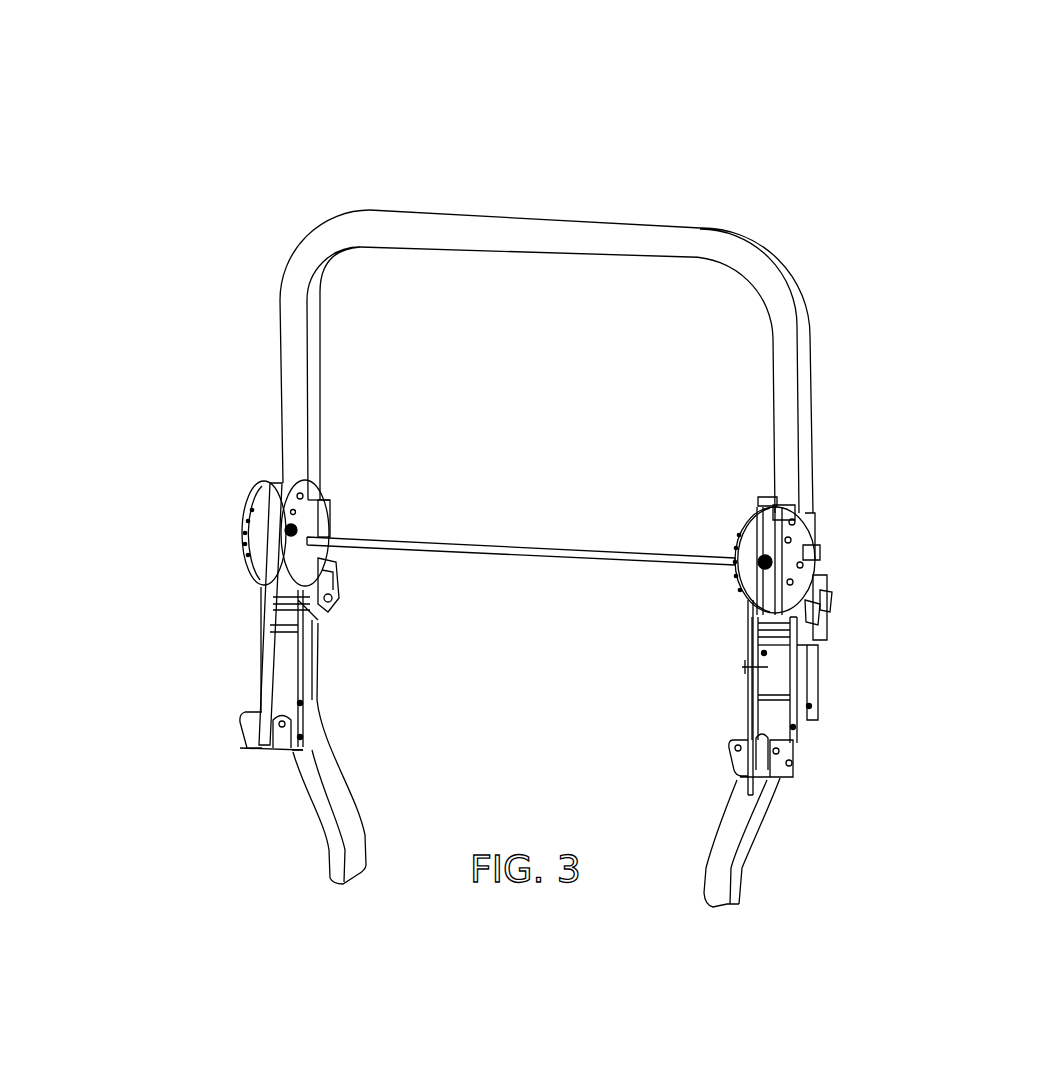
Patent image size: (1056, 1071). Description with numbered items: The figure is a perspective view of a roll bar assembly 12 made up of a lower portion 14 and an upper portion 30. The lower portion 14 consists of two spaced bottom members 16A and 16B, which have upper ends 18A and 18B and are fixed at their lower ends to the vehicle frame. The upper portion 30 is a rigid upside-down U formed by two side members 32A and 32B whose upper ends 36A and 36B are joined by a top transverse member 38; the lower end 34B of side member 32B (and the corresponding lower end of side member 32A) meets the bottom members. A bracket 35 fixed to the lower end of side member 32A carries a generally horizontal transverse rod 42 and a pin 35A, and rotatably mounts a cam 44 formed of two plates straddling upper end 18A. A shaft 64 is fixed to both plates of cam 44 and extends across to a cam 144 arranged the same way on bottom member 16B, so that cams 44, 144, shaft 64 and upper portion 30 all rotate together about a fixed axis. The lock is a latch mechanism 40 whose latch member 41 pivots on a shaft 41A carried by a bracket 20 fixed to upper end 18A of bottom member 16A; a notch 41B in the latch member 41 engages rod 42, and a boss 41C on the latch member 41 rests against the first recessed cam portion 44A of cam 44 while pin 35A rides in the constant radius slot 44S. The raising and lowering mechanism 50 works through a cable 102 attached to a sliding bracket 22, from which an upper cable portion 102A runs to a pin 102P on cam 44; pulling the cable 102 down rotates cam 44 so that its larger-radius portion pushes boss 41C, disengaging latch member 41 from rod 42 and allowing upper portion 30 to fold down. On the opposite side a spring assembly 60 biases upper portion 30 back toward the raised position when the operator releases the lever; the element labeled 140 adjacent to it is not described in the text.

The roll bar assembly 12 is at (787, 151).
The upper portion 30 is at (770, 204).
The top transverse member 38 is at (515, 230).
The upper end 36A is at (747, 276).
The upper end 36B is at (330, 270).
The side member 32A is at (775, 414).
The side member 32B is at (323, 382).
The lower end 34B is at (322, 500).
The bracket 35 is at (812, 540).
The pin 35A is at (772, 505).
The cam 44 is at (730, 580).
The constant radius slot 44S is at (778, 478).
The first recessed cam portion 44A is at (820, 550).
The pin 102P is at (745, 505).
The shaft 64 is at (472, 545).
The cam 144 is at (258, 545).
The left latch mechanism 140 is at (352, 570).
The spring assembly 60 is at (253, 632).
The upper end 18B is at (318, 660).
The bottom member 16B is at (340, 760).
The rod 42 is at (829, 588).
The latch mechanism 40 is at (864, 560).
The latch member 41 is at (823, 590).
The shaft 41A is at (755, 645).
The notch 41B is at (827, 593).
The boss 41C is at (750, 590).
The raising and lowering mechanism 50 is at (950, 602).
The upper end 18A is at (815, 675).
The cable 102 is at (748, 690).
The upper cable portion 102A is at (750, 650).
The sliding bracket 22 is at (773, 713).
The bracket 20 is at (790, 745).
The bottom member 16A is at (775, 795).
The lower portion 14 is at (890, 715).